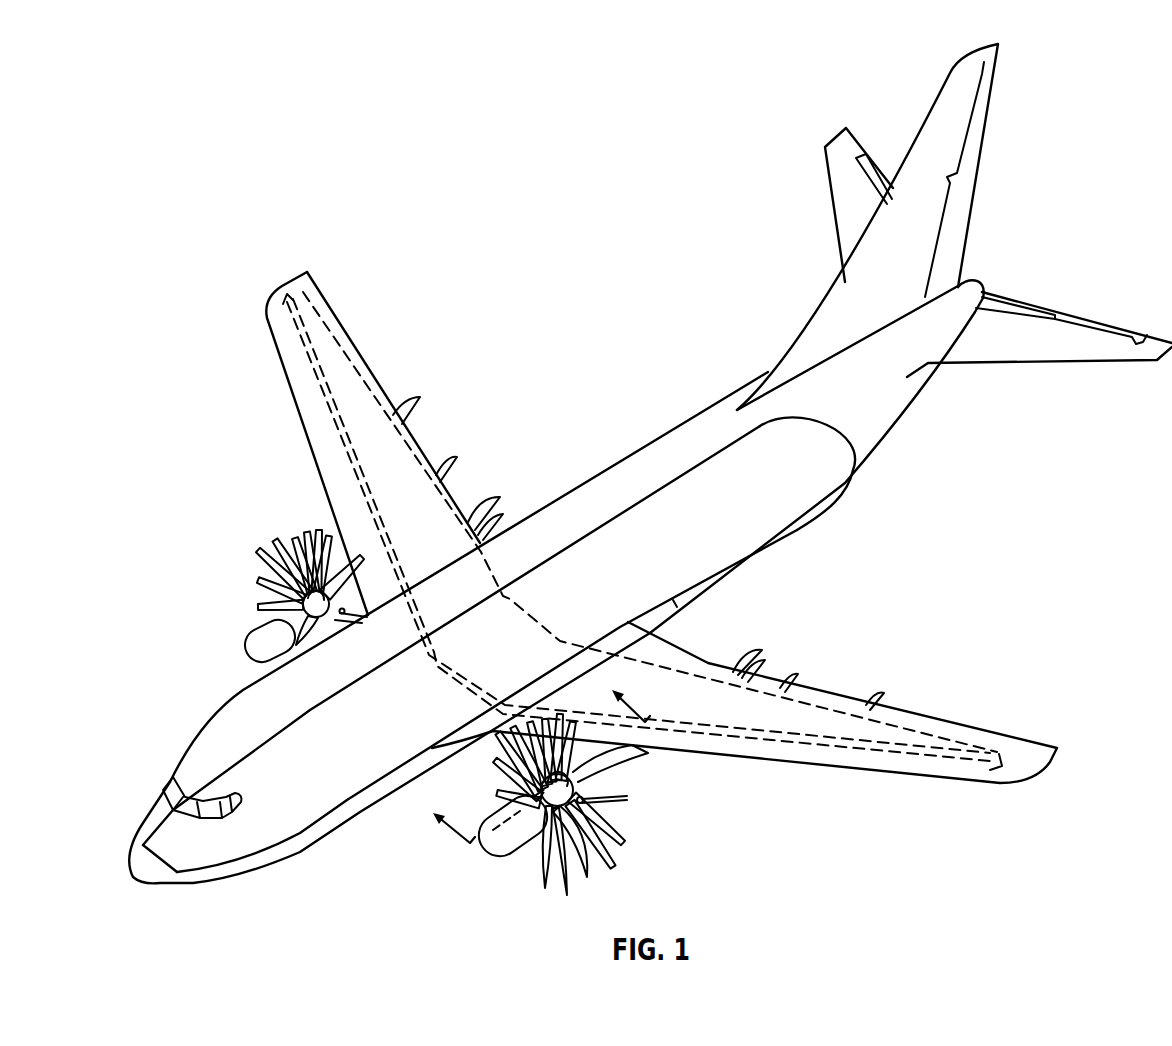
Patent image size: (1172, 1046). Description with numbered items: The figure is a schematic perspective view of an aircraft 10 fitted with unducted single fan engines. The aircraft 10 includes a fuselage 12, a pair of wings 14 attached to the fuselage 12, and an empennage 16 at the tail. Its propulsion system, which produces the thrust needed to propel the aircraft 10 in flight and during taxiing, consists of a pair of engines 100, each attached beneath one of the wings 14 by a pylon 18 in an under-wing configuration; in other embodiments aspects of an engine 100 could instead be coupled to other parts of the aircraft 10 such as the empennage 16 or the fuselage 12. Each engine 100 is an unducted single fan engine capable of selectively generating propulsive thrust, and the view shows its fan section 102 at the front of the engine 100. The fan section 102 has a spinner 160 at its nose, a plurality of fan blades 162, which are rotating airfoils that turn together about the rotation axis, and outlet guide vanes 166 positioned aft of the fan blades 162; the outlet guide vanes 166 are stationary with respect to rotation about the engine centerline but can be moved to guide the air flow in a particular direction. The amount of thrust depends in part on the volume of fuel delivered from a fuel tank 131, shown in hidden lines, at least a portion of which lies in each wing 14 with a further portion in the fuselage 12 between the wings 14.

The aircraft 10 is at (282, 522).
The fuselage 12 is at (713, 547).
The wings 14 is at (282, 335).
The empennage 16 is at (995, 203).
The pylon 18 is at (640, 755).
The engine 100 is at (250, 570).
The fan section 102 is at (488, 845).
The fuel tank 131 is at (818, 732).
The spinner 160 is at (507, 835).
The fan blades 162 is at (575, 888).
The outlet guide vanes 166 is at (595, 867).